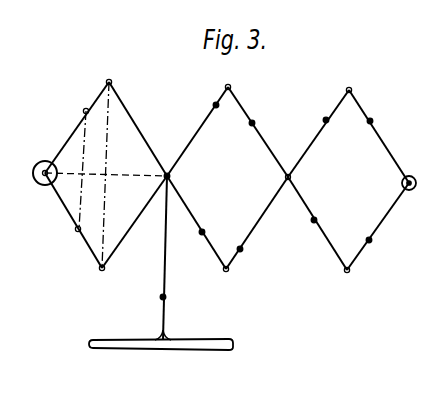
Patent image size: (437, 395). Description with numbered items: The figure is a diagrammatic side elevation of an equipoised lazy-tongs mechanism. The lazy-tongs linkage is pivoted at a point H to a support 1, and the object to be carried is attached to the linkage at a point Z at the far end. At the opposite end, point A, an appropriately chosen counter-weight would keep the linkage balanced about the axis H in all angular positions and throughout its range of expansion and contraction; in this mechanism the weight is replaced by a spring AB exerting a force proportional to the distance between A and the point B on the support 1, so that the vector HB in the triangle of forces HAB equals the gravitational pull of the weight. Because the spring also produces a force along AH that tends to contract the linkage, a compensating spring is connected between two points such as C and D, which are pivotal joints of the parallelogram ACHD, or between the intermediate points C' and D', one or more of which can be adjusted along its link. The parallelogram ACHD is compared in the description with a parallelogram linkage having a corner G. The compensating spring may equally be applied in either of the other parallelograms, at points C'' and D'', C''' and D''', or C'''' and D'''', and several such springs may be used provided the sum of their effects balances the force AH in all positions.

The support 1 is at (162, 262).
The point C is at (109, 72).
The point C' is at (94, 119).
The point C'' is at (294, 77).
The point C''' is at (283, 122).
The point C'''' is at (330, 122).
The point A is at (45, 172).
The pivot point H is at (167, 176).
The point D is at (106, 278).
The point D' is at (65, 238).
The point D'' is at (291, 282).
The point D''' is at (258, 221).
The point D'''' is at (325, 245).
The point G is at (11, 191).
The point B is at (160, 297).
The point Z is at (411, 188).